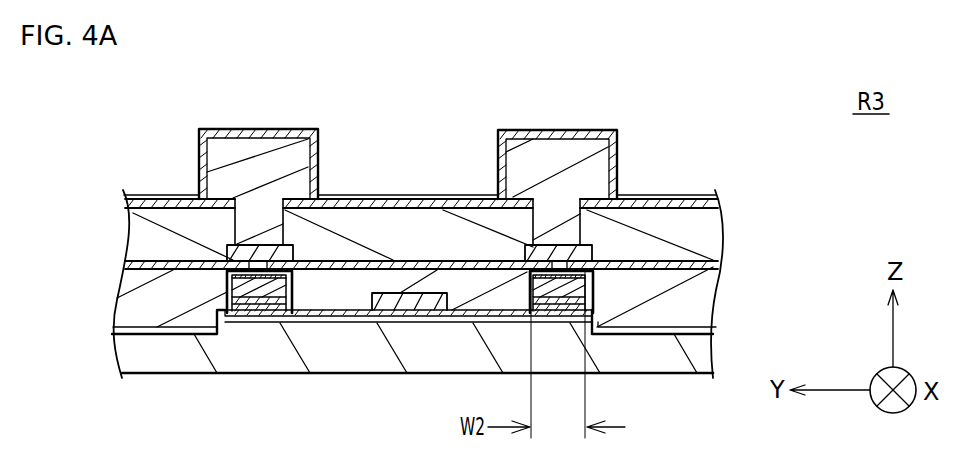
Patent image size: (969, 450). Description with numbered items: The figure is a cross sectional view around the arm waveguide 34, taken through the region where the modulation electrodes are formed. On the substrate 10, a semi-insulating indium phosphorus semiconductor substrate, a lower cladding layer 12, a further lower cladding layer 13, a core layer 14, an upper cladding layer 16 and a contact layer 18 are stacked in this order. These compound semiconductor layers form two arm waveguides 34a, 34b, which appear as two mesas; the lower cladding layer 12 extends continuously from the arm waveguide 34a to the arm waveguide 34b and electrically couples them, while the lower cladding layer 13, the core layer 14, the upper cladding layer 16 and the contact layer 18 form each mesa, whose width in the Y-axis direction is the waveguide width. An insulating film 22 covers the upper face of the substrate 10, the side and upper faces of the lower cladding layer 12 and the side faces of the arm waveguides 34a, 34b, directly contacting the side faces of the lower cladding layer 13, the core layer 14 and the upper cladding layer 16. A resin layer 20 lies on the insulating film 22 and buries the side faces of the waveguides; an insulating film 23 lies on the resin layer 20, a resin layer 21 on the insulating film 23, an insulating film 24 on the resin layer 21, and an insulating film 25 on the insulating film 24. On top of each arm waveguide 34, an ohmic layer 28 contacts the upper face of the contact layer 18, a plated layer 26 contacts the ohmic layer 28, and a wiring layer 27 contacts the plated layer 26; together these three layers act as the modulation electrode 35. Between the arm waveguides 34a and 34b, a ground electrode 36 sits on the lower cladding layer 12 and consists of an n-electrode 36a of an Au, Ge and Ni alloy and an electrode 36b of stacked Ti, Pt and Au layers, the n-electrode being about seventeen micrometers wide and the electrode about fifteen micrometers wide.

The substrate 10 is at (716, 355).
The lower cladding layer 12 is at (236, 313).
The lower cladding layer 13 is at (262, 314).
The core layer 14 is at (233, 300).
The upper cladding layer 16 is at (233, 276).
The contact layer 18 is at (227, 272).
The resin layer 20 is at (720, 296).
The resin layer 21 is at (722, 236).
The insulating film 22 is at (718, 330).
The insulating film 23 is at (720, 266).
The insulating film 24 is at (720, 205).
The insulating film 25 is at (718, 195).
The plated layer 26 is at (200, 196).
The wiring layer 27 is at (318, 152).
The ohmic layer 28 is at (227, 248).
The arm waveguide 34 is at (467, 348).
The arm waveguide 34a is at (305, 299).
The arm waveguide 34b is at (606, 297).
The modulation electrode 35 is at (310, 125).
The ground electrode 36 is at (424, 197).
The n-electrode 36a is at (401, 293).
The electrode 36b is at (433, 297).